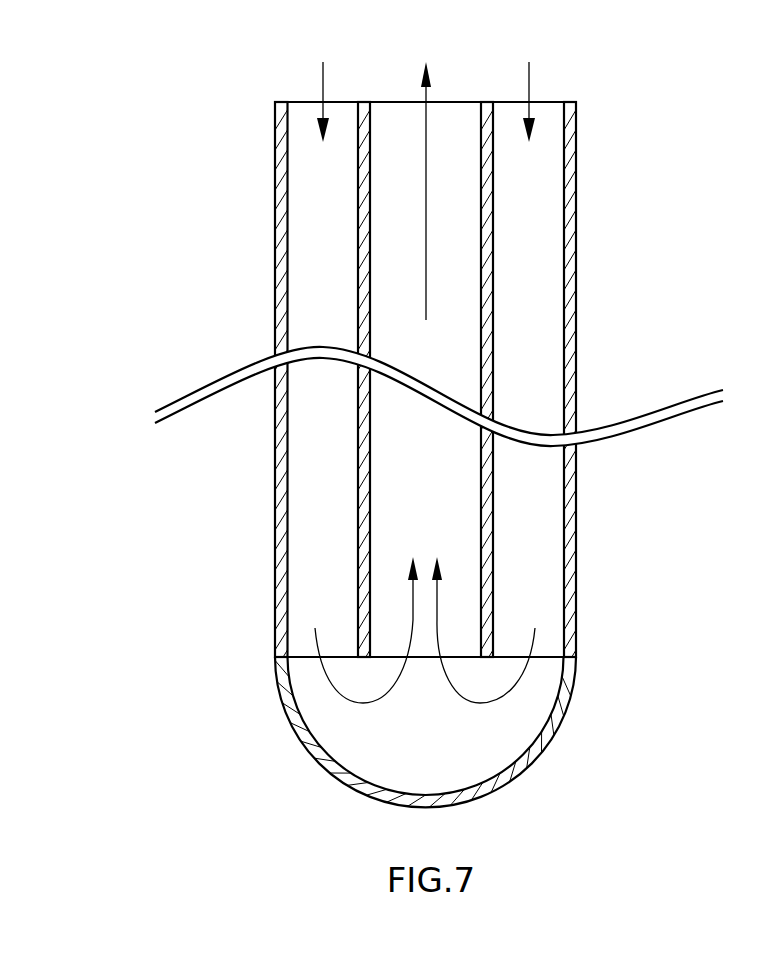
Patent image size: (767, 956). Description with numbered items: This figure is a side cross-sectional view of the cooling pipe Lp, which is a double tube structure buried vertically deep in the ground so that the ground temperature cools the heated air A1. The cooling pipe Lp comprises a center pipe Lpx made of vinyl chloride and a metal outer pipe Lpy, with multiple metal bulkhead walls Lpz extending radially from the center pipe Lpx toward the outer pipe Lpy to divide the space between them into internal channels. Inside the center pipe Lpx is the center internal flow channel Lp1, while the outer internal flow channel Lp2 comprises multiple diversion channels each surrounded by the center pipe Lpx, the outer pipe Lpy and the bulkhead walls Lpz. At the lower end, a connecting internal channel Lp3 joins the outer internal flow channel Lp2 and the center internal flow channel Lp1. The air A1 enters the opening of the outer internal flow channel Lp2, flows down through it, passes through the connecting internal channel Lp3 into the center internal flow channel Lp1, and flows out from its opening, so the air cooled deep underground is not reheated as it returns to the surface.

The cooling pipe Lp is at (86, 519).
The outer pipe Lpy is at (577, 153).
The center pipe Lpx is at (493, 312).
The center internal flow channel Lp1 is at (390, 294).
The outer internal flow channel Lp2 is at (420, 130).
The connecting internal channel Lp3 is at (390, 740).
The bulkhead walls Lpz is at (447, 483).
The air A1 is at (426, 90).